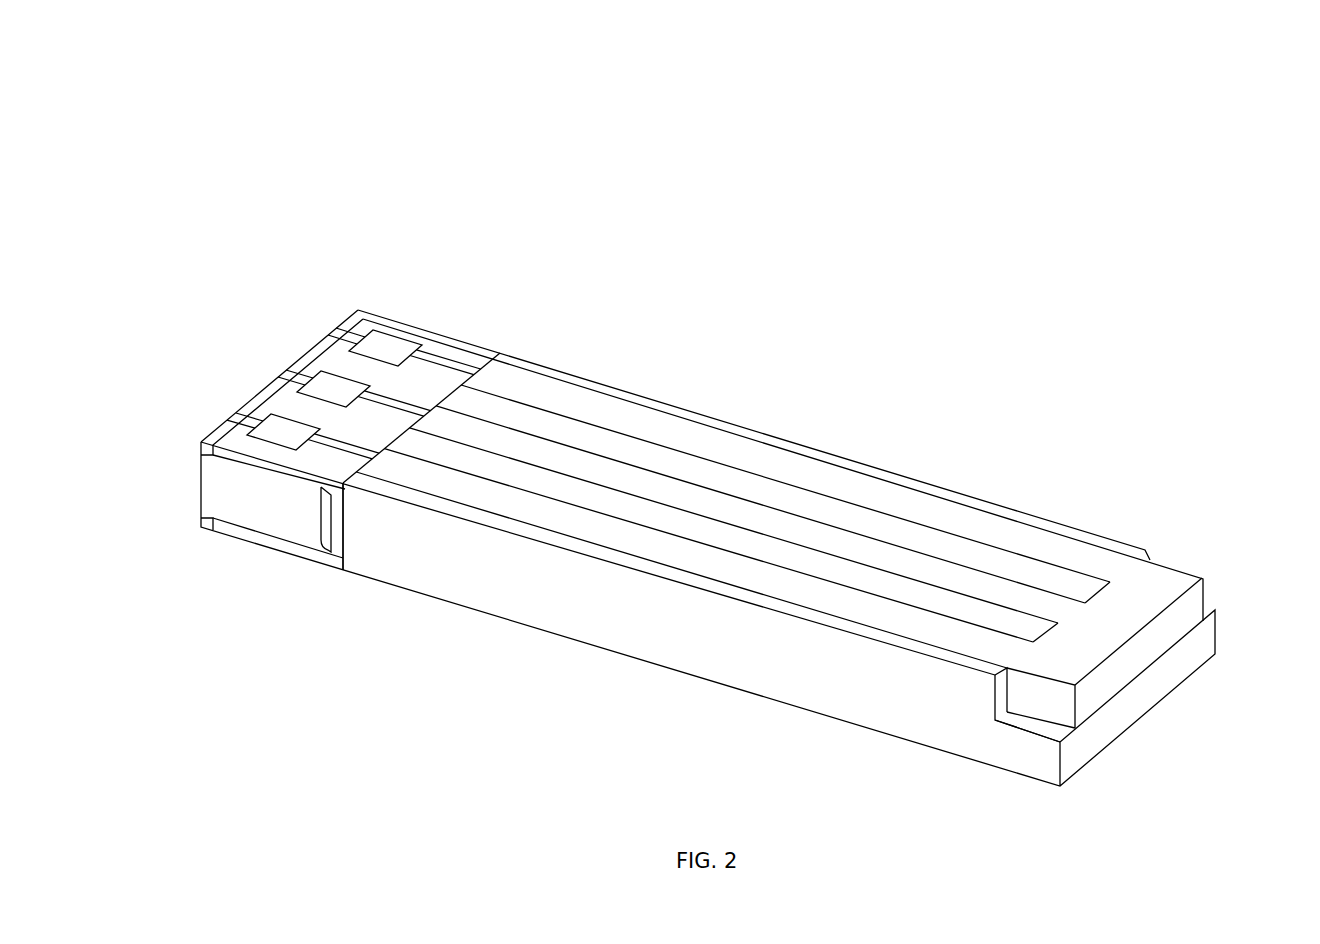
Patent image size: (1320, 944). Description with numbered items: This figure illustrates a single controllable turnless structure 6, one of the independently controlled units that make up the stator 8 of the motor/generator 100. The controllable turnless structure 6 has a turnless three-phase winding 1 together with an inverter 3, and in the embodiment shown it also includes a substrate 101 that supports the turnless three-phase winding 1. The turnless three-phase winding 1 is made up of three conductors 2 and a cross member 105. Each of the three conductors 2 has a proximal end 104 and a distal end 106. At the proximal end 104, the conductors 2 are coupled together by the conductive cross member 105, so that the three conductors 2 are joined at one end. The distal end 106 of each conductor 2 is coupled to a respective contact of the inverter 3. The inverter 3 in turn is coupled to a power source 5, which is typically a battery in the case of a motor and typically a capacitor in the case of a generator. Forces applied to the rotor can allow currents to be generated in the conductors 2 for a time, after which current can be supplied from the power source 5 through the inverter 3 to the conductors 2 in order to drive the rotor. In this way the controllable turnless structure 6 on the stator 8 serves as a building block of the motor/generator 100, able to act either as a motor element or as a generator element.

The motor/generator 100 is at (250, 131).
The turnless three-phase winding 1 is at (1151, 546).
The conductors 2 is at (965, 642).
The inverter 3 is at (432, 303).
The power source 5 is at (298, 515).
The controllable turnless structure 6 is at (851, 395).
The stator 8 is at (437, 545).
The substrate 101 is at (1115, 725).
The proximal end 104 is at (992, 640).
The cross member 105 is at (1122, 613).
The distal end 106 is at (383, 468).